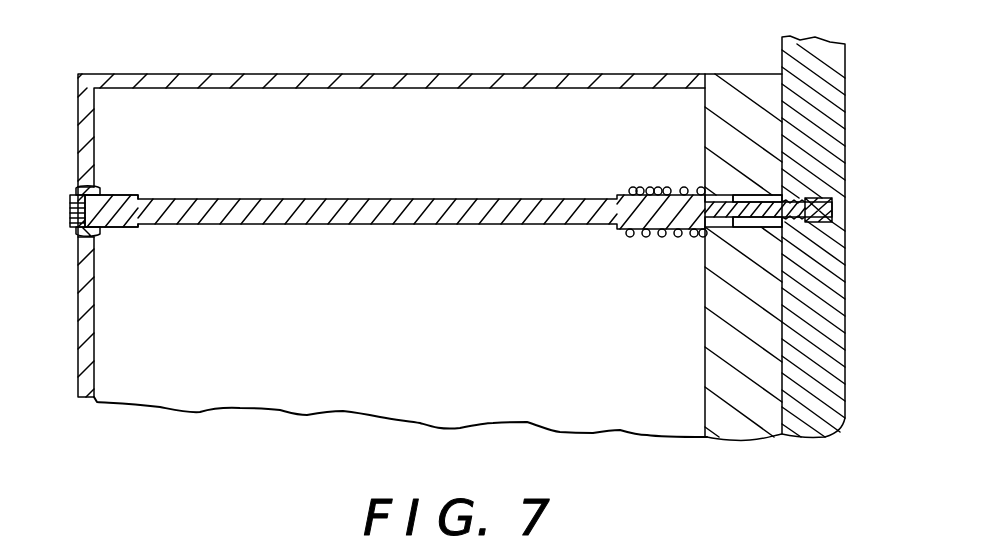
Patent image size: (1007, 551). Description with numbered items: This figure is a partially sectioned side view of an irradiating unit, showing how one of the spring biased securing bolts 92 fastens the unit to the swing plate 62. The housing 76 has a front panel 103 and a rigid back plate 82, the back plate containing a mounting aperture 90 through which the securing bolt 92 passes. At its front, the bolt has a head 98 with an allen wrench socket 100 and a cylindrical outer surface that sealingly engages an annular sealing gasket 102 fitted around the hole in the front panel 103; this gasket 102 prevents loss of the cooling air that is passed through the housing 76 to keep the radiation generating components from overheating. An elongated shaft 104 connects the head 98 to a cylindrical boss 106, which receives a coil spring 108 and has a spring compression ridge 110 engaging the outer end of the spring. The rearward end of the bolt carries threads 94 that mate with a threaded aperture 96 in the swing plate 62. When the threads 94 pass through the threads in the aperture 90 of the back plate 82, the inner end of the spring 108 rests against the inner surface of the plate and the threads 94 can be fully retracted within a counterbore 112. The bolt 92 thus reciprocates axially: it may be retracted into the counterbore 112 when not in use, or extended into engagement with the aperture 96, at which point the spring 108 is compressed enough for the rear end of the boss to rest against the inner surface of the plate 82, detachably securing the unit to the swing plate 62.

The swing plate 62 is at (844, 303).
The housing 76 is at (546, 68).
The rigid back plate 82 is at (714, 74).
The mounting aperture 90 is at (720, 229).
The spring biased securing bolt 92 is at (490, 229).
The threads 94 is at (805, 218).
The threaded aperture 96 is at (845, 205).
The head 98 is at (130, 228).
The allen wrench socket 100 is at (70, 222).
The annular sealing gasket 102 is at (98, 186).
The front panel 103 is at (94, 137).
The elongated shaft 104 is at (400, 199).
The cylindrical boss 106 is at (645, 187).
The coil spring 108 is at (652, 188).
The spring compression ridge 110 is at (628, 236).
The counterbore 112 is at (748, 228).